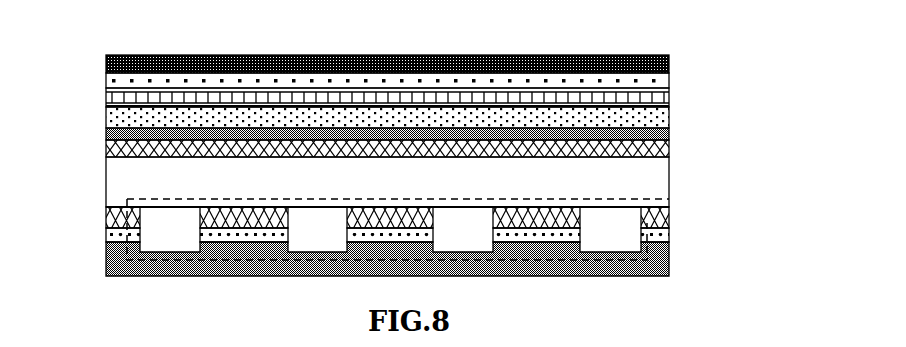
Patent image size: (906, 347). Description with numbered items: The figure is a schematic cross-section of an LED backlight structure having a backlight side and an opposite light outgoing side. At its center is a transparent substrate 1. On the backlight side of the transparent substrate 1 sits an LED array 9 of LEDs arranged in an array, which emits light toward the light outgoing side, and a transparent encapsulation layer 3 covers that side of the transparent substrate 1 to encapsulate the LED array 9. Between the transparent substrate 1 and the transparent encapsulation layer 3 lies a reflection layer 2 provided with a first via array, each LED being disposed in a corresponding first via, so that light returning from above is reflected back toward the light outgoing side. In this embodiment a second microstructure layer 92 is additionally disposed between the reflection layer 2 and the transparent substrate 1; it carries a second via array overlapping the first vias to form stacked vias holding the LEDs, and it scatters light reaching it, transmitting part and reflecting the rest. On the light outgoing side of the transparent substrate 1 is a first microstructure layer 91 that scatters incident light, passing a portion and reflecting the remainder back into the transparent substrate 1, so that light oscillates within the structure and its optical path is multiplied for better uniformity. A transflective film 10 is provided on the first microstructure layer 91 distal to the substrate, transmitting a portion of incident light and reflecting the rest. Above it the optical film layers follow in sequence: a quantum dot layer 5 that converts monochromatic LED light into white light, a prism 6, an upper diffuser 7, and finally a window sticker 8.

The window sticker 8 is at (393, 55).
The upper diffuser 7 is at (669, 80).
The prism 6 is at (106, 97).
The quantum dot layer 5 is at (669, 118).
The transflective film 10 is at (106, 135).
The first microstructure layer 91 is at (669, 149).
The transparent substrate 1 is at (669, 175).
The second microstructure layer 92 is at (669, 211).
The reflection layer 2 is at (669, 238).
The transparent encapsulation layer 3 is at (431, 270).
The LED array 9 is at (127, 231).